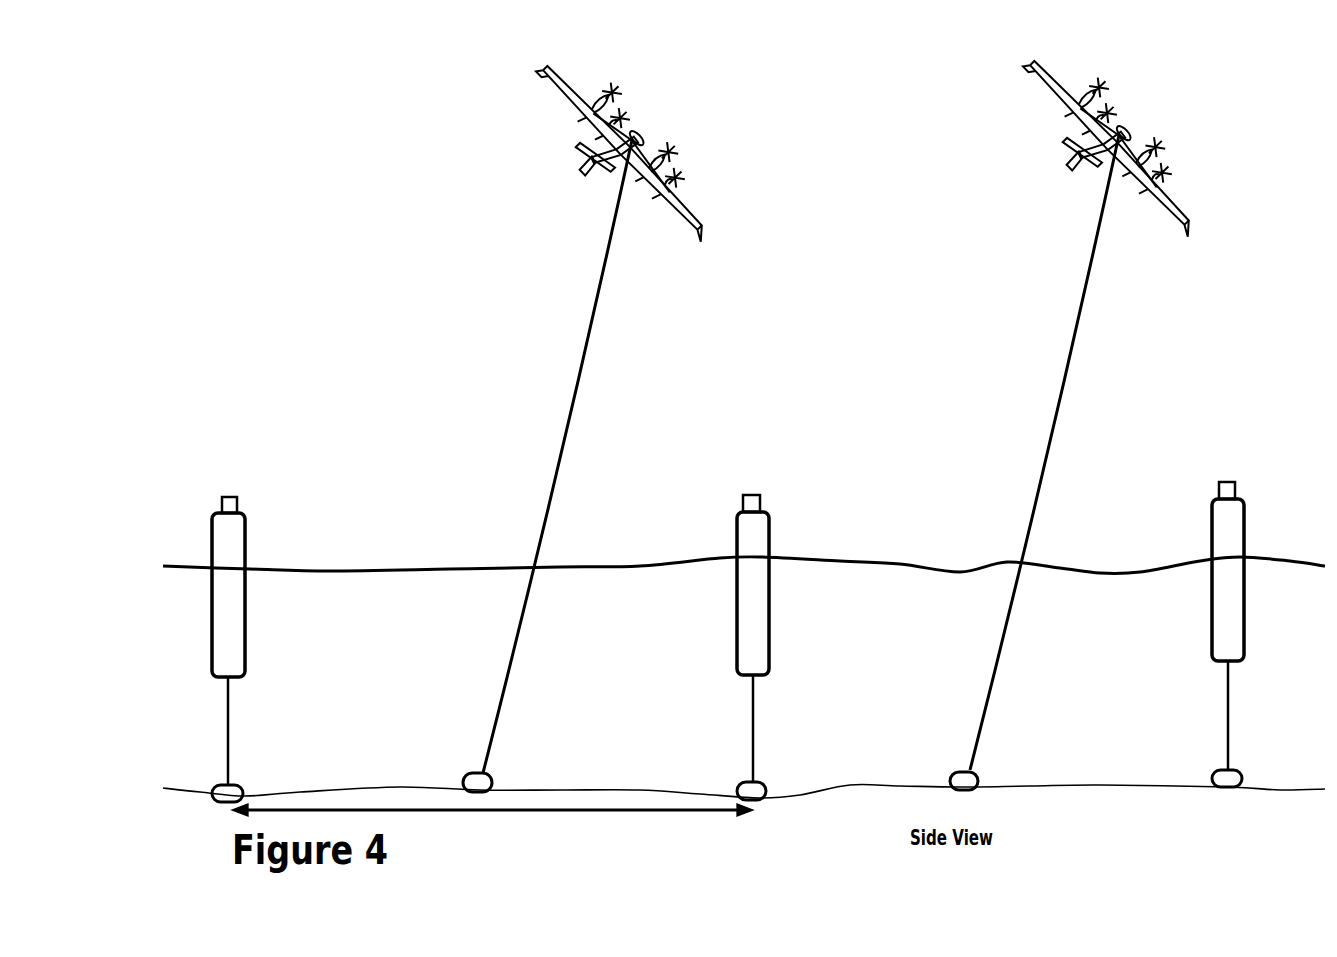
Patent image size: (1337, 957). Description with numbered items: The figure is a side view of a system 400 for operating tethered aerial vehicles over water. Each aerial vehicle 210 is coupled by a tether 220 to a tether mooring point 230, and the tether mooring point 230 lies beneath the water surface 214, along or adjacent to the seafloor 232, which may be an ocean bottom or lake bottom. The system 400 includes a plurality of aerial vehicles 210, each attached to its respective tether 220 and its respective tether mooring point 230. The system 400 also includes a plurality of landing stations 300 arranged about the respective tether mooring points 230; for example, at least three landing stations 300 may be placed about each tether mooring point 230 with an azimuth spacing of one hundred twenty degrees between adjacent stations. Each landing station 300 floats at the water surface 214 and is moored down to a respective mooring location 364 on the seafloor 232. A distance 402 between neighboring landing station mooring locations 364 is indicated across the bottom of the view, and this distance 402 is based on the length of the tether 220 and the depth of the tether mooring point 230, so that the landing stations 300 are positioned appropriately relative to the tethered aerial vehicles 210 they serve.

The aerial vehicle 210 is at (698, 213).
The water surface 214 is at (562, 566).
The tether 220 is at (592, 320).
The tether mooring point 230 is at (472, 775).
The seafloor 232 is at (873, 783).
The landing station 300 is at (246, 543).
The mooring location 364 is at (235, 785).
The system 400 is at (1249, 129).
The distance 402 is at (638, 810).